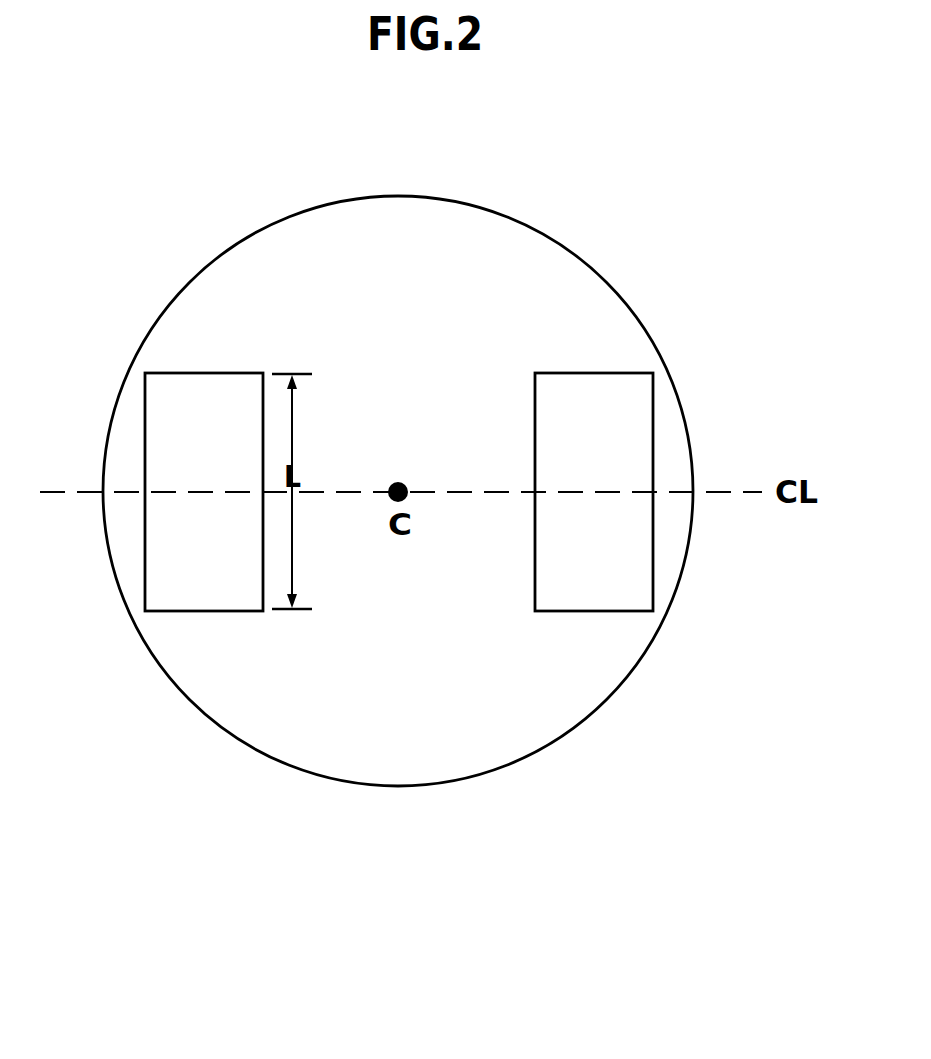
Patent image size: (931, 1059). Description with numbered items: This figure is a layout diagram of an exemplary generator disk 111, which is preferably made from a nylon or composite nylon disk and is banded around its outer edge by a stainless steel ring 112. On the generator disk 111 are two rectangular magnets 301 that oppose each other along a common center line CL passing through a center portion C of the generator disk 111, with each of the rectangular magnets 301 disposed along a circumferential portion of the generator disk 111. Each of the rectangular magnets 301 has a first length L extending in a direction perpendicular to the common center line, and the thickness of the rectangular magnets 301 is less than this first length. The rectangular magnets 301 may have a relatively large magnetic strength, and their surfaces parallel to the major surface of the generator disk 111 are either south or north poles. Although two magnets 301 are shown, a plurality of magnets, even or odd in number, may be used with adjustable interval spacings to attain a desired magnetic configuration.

The generator disk 111 is at (333, 302).
The stainless steel ring 112 is at (320, 780).
The rectangular magnets 301 is at (163, 611).